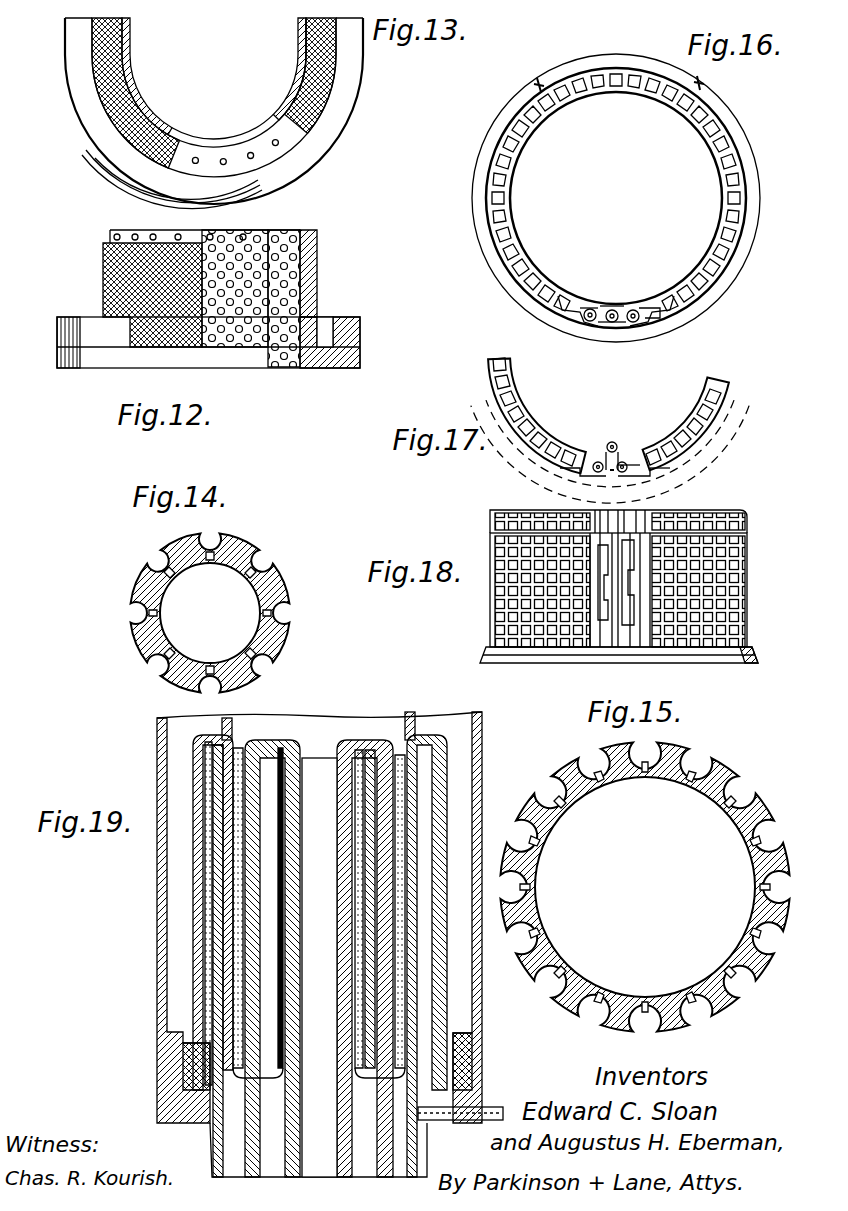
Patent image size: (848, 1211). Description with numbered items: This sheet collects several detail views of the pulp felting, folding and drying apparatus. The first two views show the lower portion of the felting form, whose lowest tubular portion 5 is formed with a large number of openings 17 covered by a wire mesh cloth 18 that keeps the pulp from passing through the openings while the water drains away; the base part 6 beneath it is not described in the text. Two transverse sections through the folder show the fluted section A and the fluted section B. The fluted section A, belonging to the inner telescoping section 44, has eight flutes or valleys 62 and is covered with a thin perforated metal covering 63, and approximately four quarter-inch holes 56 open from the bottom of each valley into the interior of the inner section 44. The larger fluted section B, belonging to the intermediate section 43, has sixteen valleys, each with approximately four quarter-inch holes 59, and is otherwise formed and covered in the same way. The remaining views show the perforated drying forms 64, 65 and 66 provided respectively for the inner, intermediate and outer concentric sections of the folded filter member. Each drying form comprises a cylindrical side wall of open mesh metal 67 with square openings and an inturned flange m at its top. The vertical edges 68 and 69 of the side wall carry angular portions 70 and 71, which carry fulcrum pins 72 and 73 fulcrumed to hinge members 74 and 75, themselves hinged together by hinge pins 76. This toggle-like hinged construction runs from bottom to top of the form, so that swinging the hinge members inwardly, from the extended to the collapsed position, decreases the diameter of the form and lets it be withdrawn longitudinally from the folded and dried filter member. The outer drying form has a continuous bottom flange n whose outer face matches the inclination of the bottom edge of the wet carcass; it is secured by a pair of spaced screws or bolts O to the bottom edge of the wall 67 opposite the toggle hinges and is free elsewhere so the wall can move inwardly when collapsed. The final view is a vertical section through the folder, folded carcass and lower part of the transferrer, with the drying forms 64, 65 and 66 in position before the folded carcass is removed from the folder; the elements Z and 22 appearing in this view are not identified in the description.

In FIG. 12, the tubular portion 5 is at (102, 243).
In FIG. 13, the base shell 6 is at (310, 150).
In FIG. 12, the base shell 6 is at (100, 360).
In FIG. 13, the openings 17 is at (153, 120).
In FIG. 12, the openings 17 is at (262, 247).
In FIG. 13, the wire mesh cloth 18 is at (352, 68).
In FIG. 12, the wire mesh cloth 18 is at (103, 262).
In FIG. 19, the base plug 22 is at (160, 1046).
In FIG. 15, the intermediate section 43 is at (558, 948).
In FIG. 14, the inner section 44 is at (188, 668).
In FIG. 14, the holes 56 is at (234, 578).
In FIG. 15, the holes 59 is at (742, 840).
In FIG. 14, the flutes or valleys 62 is at (160, 660).
In FIG. 14, the perforated metal covering 63 is at (270, 613).
In FIG. 19, the drying form 64 is at (338, 770).
In FIG. 19, the drying form 65 is at (397, 797).
In FIG. 19, the drying form 66 is at (428, 817).
In FIG. 18, the cylindrical side wall of open mesh metal 67 is at (745, 568).
In FIG. 16, the vertical edge 68 is at (656, 304).
In FIG. 17, the vertical edge 68 is at (660, 470).
In FIG. 16, the vertical edge 69 is at (570, 300).
In FIG. 17, the vertical edge 69 is at (590, 460).
In FIG. 16, the angular portion 70 is at (650, 320).
In FIG. 17, the angular portion 70 is at (645, 478).
In FIG. 16, the angular portion 71 is at (570, 318).
In FIG. 17, the angular portion 71 is at (575, 472).
In FIG. 16, the fulcrum pin 72 is at (636, 306).
In FIG. 17, the fulcrum pin 72 is at (627, 464).
In FIG. 16, the fulcrum pin 73 is at (591, 302).
In FIG. 17, the fulcrum pin 73 is at (600, 450).
In FIG. 16, the hinge member 74 is at (630, 303).
In FIG. 17, the hinge member 74 is at (622, 460).
In FIG. 16, the hinge member 75 is at (606, 308).
In FIG. 17, the hinge member 75 is at (614, 440).
In FIG. 16, the hinge pins 76 is at (616, 302).
In FIG. 17, the hinge pins 76 is at (612, 455).
In FIG. 14, the fluted section A is at (190, 613).
In FIG. 15, the fluted section B is at (645, 887).
In FIG. 16, the screws or bolts O is at (540, 80).
In FIG. 19, the screws or bolts O is at (122, 1040).
In FIG. 19, the electrode assembly Z is at (205, 967).
In FIG. 16, the inturned flange m is at (520, 262).
In FIG. 17, the inturned flange m is at (518, 385).
In FIG. 14, the inturned flange m is at (262, 690).
In FIG. 18, the inturned flange m is at (732, 512).
In FIG. 19, the inturned flange m is at (292, 742).
In FIG. 16, the bottom flange n is at (476, 218).
In FIG. 18, the bottom flange n is at (484, 656).
In FIG. 19, the bottom flange n is at (158, 1086).